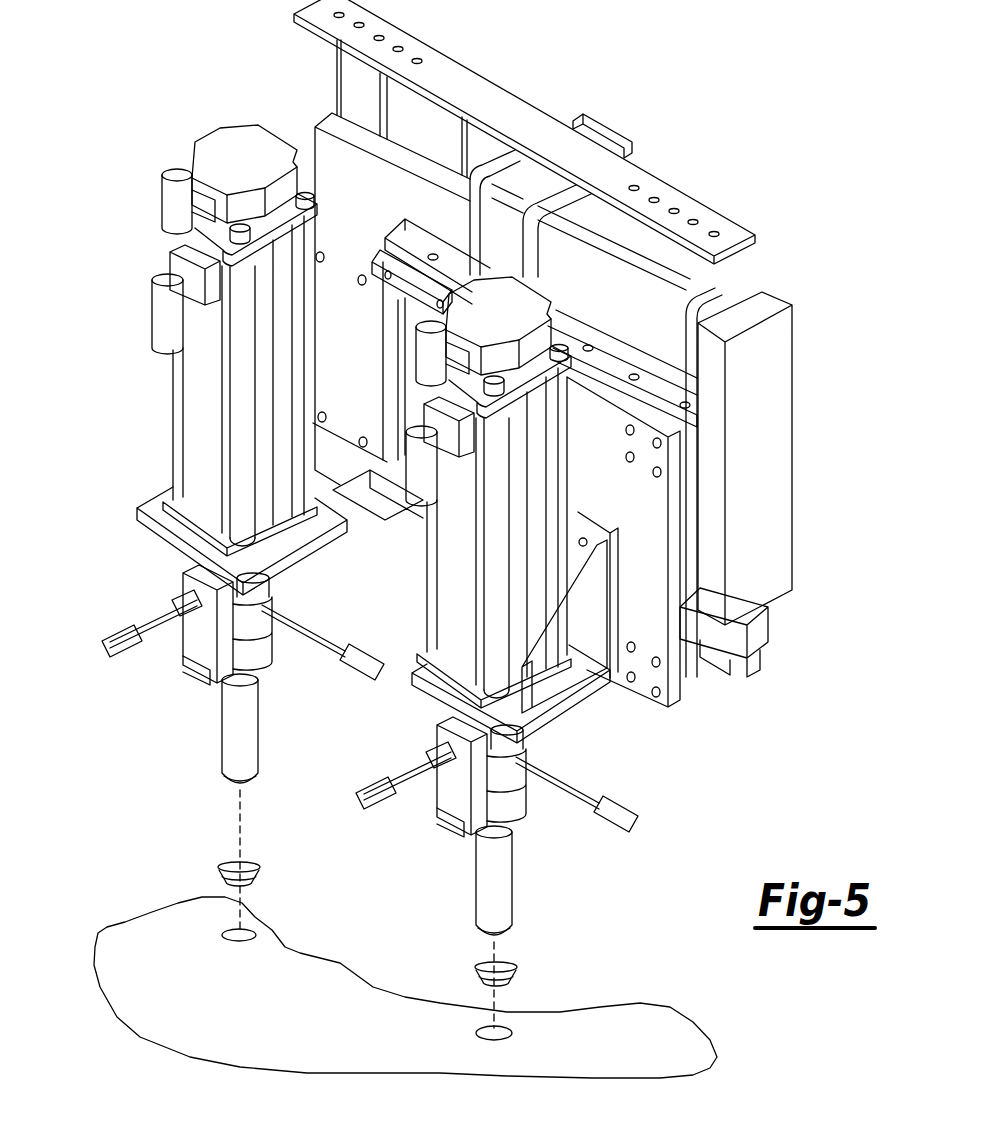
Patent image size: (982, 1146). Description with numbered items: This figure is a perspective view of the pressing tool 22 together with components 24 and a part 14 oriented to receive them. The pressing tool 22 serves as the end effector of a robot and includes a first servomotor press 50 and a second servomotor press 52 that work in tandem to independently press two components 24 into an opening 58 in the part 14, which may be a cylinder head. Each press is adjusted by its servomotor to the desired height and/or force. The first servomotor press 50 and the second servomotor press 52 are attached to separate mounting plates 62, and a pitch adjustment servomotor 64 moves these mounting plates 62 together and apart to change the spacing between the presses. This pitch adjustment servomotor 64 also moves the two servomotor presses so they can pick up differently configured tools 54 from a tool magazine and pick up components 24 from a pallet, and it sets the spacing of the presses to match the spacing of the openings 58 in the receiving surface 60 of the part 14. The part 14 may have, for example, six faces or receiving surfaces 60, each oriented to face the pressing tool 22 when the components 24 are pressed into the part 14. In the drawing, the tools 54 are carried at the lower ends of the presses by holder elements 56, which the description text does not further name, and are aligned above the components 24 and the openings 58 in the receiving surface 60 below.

The part 14 is at (384, 987).
The pressing tool 22 is at (209, 342).
The components 24 is at (235, 880).
The first servomotor press 50 is at (186, 393).
The second servomotor press 52 is at (538, 475).
The tools 54 is at (237, 732).
The nozzle holder 56 is at (262, 633).
The opening 58 is at (247, 930).
The receiving surfaces 60 is at (350, 1032).
The mounting plates 62 is at (330, 265).
The pitch adjustment servomotor 64 is at (672, 270).